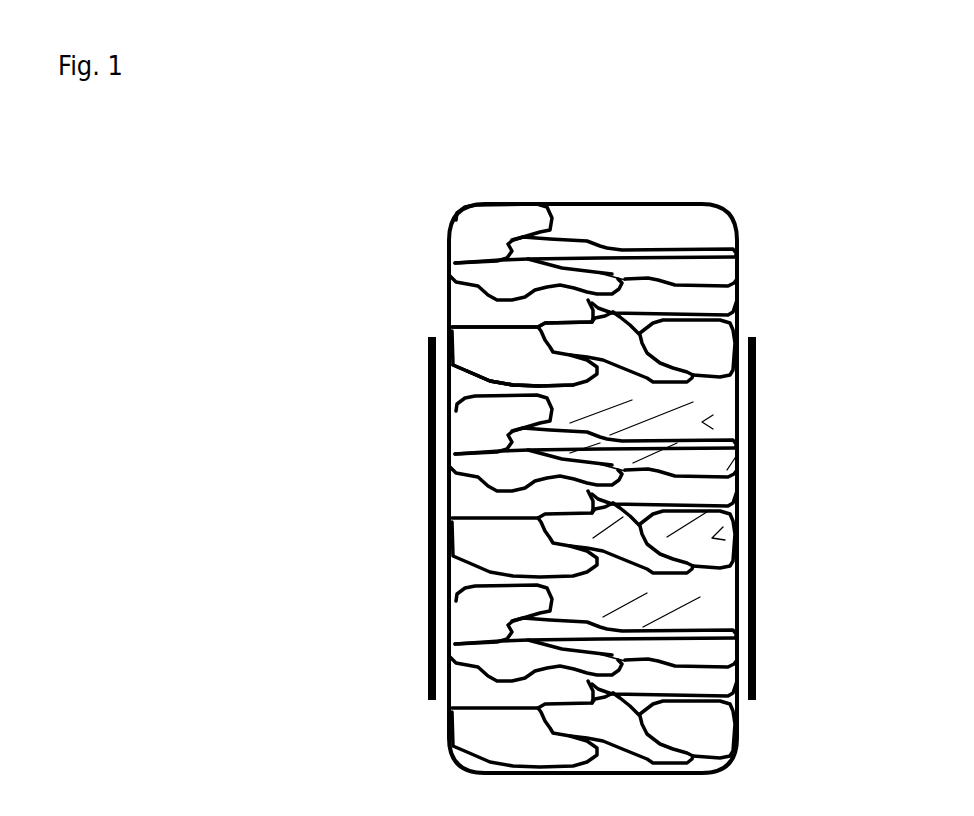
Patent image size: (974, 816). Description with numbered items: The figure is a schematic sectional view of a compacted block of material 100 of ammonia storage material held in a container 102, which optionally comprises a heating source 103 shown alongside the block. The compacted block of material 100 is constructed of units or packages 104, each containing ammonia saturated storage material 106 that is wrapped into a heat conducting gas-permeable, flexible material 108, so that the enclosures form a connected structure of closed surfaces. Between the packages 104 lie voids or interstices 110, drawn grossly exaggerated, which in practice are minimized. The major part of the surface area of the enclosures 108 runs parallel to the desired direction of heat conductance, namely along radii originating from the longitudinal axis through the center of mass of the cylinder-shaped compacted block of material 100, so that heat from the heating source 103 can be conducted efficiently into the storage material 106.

The compacted block of material 100 is at (717, 210).
The container 102 is at (740, 275).
The heating source 103 is at (757, 368).
The units or packages 104 is at (713, 537).
The ammonia saturated storage material 106 is at (666, 616).
The heat conducting gas-permeable, flexible material 108 is at (520, 382).
The voids or interstices 110 is at (497, 390).